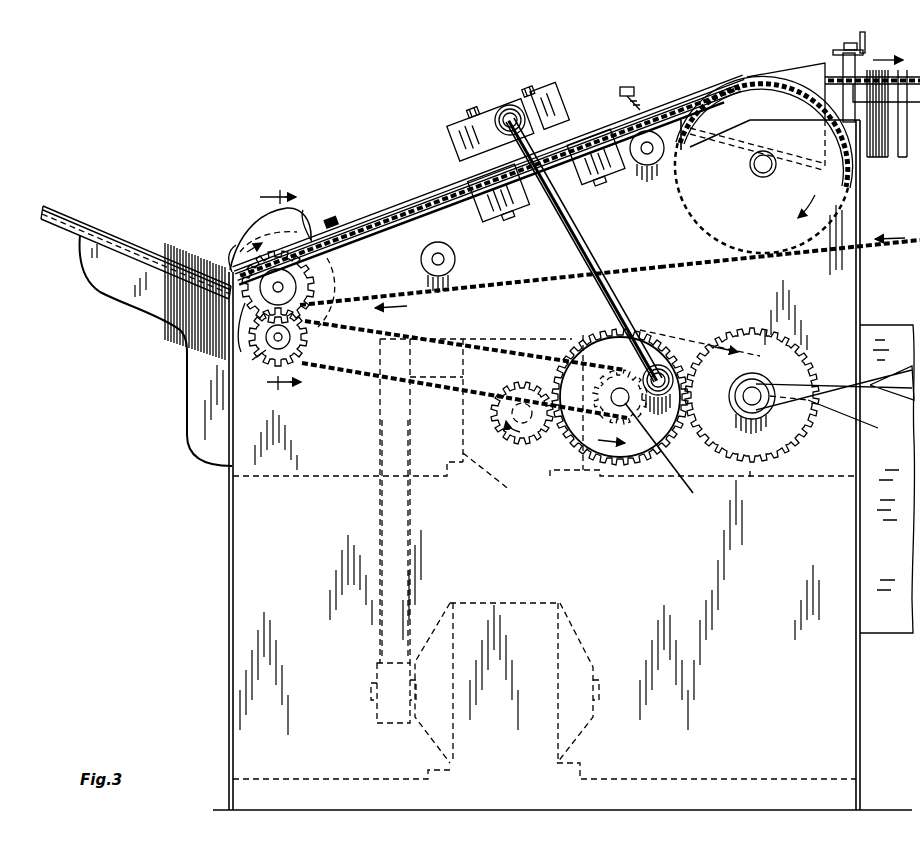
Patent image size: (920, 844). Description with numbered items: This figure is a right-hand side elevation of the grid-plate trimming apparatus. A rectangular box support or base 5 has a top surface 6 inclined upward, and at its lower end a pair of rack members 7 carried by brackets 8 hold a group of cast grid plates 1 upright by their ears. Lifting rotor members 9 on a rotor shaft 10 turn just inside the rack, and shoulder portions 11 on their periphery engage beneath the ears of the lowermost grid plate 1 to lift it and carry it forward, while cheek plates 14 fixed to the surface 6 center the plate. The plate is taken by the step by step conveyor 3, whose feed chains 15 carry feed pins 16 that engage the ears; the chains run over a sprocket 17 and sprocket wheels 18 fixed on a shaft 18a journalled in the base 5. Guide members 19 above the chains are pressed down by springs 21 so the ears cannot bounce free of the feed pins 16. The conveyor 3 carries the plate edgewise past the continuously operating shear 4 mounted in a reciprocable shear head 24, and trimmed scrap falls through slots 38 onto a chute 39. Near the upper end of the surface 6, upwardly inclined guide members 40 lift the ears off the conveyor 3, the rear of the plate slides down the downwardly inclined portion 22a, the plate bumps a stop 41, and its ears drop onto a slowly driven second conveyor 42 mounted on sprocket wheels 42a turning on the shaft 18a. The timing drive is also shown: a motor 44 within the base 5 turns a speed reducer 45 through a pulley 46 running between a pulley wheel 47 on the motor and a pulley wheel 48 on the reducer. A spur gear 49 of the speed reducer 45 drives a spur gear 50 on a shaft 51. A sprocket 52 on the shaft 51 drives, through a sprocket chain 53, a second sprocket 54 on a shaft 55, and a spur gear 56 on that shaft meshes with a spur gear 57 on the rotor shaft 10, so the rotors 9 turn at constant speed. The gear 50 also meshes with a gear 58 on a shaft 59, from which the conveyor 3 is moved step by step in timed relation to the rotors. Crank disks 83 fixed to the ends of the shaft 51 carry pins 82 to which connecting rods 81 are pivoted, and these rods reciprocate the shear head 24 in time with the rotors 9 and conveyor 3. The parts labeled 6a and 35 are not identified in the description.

The grid plate 1 is at (172, 345).
The step by step conveyor 3 is at (481, 193).
The shear 4 is at (488, 183).
The box support or base 5 is at (229, 591).
The top surface 6 is at (432, 220).
The roller block 6a is at (549, 105).
The rack members 7 is at (80, 221).
The brackets 8 is at (122, 287).
The lifting rotor members 9 is at (270, 235).
The rotor shaft 10 is at (300, 286).
The shoulder portions 11 is at (307, 222).
The cheek plates 14 is at (243, 236).
The feed chains 15 is at (489, 175).
The feed pins 16 is at (490, 182).
The sprocket 17 is at (328, 290).
The sprocket wheels 18 is at (700, 222).
The shaft 18a is at (750, 166).
The guide members 19 is at (488, 171).
The springs 21 is at (331, 222).
The downwardly inclined portion 22a is at (754, 144).
The shear head 24 is at (490, 130).
The screw 35 is at (500, 102).
The slots 38 is at (548, 177).
The chute 39 is at (655, 322).
The guide members 40 is at (803, 76).
The stop 41 is at (840, 50).
The second conveyor 42 is at (908, 70).
The sprocket wheels 42a is at (735, 236).
The motor 44 is at (590, 620).
The speed reducer 45 is at (496, 478).
The pulley 46 is at (412, 535).
The pulley wheel 47 is at (375, 712).
The pulley wheel 48 is at (378, 437).
The spur gear 49 is at (540, 443).
The spur gear 50 is at (655, 446).
The shaft 51 is at (665, 427).
The sprocket 52 is at (574, 345).
The sprocket chain 53 is at (452, 340).
The second sprocket 54 is at (322, 374).
The shaft 55 is at (305, 343).
The spur gear 56 is at (266, 362).
The spur gear 57 is at (258, 352).
The gear 58 is at (810, 440).
The shaft 59 is at (765, 393).
The connecting rods 81 is at (590, 236).
The pins 82 is at (667, 370).
The crank disks 83 is at (665, 453).